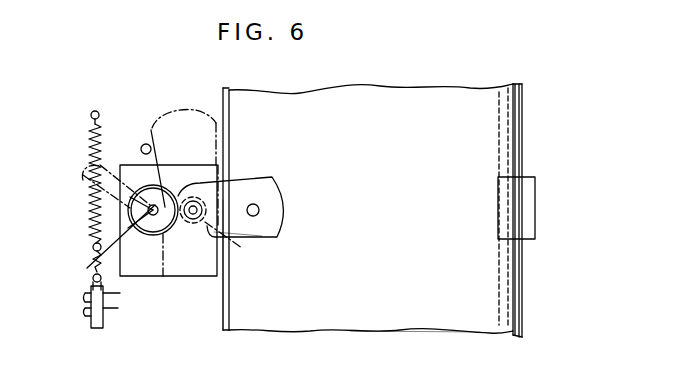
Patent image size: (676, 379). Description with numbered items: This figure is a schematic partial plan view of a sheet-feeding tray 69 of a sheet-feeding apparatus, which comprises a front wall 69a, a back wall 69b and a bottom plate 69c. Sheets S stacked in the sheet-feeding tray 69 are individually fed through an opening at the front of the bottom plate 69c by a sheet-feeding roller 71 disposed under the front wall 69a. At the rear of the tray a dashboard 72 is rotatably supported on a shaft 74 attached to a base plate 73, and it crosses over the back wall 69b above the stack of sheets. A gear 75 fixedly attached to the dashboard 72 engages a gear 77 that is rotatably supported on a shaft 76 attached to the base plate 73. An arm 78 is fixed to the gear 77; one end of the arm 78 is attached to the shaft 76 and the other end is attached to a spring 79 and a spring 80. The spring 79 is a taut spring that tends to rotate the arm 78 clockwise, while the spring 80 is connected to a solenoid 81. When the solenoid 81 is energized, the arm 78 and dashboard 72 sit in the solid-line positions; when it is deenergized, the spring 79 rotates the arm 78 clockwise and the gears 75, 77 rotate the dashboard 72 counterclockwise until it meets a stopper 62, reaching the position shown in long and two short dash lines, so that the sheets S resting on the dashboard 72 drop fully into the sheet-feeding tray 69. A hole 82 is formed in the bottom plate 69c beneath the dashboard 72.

The stopper 62 is at (147, 144).
The sheet-feeding tray 69 is at (362, 327).
The front wall 69a is at (523, 142).
The back wall 69b is at (223, 305).
The bottom plate 69c is at (419, 333).
The sheets S is at (287, 326).
The sheet-feeding roller 71 is at (537, 206).
The dashboard 72 is at (266, 239).
The base plate 73 is at (153, 278).
The shaft 74 is at (190, 226).
The gear 75 is at (236, 240).
The shaft 76 is at (155, 222).
The gear 77 is at (163, 237).
The arm 78 is at (118, 280).
The spring 79 is at (92, 152).
The spring 80 is at (96, 258).
The solenoid 81 is at (90, 325).
The hole 82 is at (260, 214).